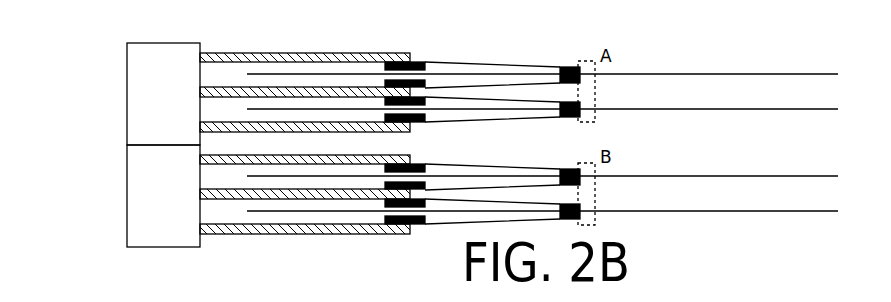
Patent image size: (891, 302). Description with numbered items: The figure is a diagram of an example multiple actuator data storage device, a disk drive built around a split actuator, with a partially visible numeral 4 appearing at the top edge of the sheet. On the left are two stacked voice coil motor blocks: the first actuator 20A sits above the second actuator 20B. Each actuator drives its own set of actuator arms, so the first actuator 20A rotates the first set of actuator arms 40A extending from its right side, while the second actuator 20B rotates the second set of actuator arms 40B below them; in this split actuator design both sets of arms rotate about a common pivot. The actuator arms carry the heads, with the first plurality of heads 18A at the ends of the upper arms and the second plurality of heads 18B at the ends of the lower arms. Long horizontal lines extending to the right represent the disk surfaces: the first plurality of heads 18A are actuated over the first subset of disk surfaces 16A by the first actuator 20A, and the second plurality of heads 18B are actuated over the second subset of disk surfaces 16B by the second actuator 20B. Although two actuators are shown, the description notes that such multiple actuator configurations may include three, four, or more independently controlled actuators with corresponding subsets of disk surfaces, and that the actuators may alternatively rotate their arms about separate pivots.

The first actuator 20A is at (126, 51).
The second actuator 20B is at (126, 158).
The first set of actuator arms 40A is at (288, 53).
The second set of actuator arms 40B is at (270, 234).
The first plurality of heads 18A is at (569, 66).
The second plurality of heads 18B is at (569, 165).
The first subset of disk surfaces 16A is at (829, 69).
The second subset of disk surfaces 16B is at (826, 173).
The partially visible numeral 4 is at (693, 5).